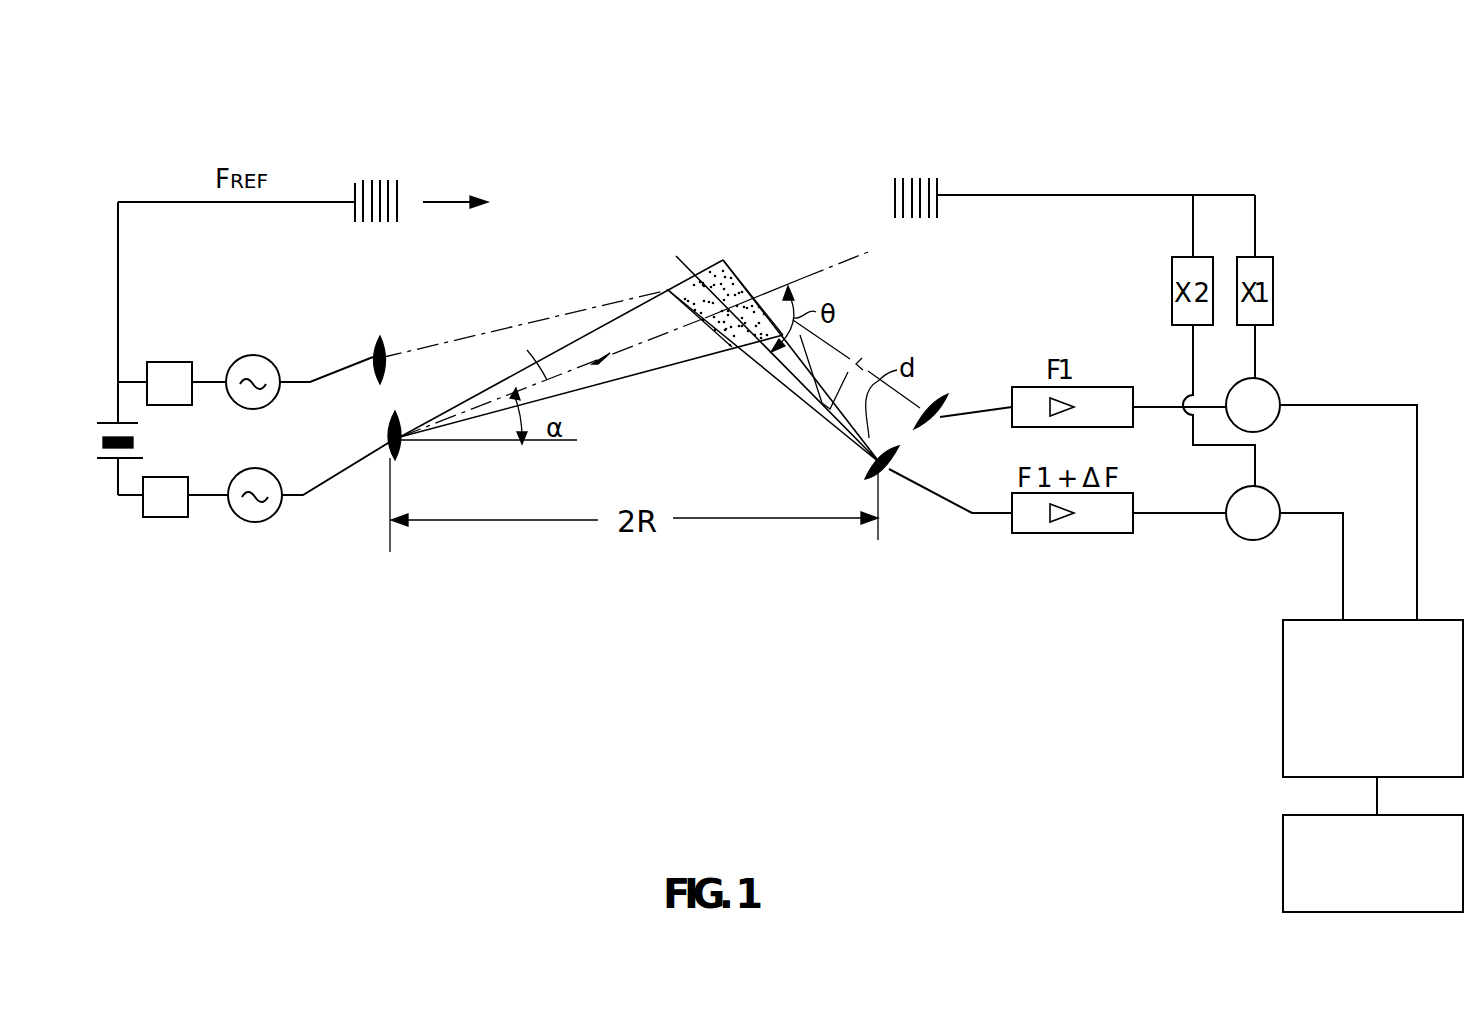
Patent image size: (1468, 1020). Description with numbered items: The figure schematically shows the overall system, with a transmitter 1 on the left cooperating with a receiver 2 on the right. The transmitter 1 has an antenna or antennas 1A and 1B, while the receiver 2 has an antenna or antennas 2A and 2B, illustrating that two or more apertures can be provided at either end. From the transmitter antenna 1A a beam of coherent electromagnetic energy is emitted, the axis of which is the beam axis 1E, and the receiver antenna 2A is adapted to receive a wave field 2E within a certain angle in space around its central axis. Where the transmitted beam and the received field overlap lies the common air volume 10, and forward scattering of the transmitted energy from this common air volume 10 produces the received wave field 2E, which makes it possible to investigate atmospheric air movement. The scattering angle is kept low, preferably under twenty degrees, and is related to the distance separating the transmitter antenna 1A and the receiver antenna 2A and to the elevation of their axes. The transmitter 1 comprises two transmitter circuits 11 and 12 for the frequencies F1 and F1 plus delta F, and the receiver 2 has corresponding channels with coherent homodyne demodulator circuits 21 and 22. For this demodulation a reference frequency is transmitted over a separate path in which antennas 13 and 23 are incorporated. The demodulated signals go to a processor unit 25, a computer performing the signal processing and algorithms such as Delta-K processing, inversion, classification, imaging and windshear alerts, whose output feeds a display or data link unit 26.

The transmitter 1 is at (203, 548).
The transmitter antenna 1A is at (386, 430).
The transmitter antenna 1B is at (374, 352).
The beam axis of transmitted electromagnetic energy 1E is at (498, 334).
The receiver 2 is at (934, 603).
The receiver antenna 2A is at (886, 478).
The receiver antenna 2B is at (923, 427).
The received wave field 2E is at (860, 362).
The common air volume 10 is at (683, 292).
The transmitter circuit 11 is at (276, 364).
The transmitter circuit 12 is at (262, 521).
The reference frequency antenna 13 is at (373, 186).
The coherent homodyne demodulator circuit 21 is at (1272, 389).
The coherent homodyne demodulator circuit 22 is at (1272, 497).
The reference frequency antenna 23 is at (928, 190).
The processor unit 25 is at (1283, 702).
The display or data link unit 26 is at (1283, 848).